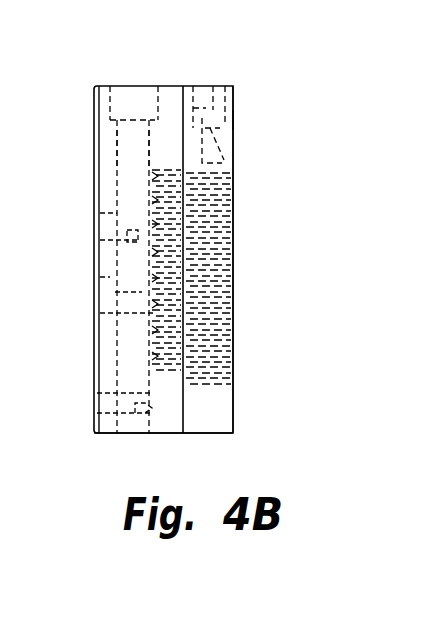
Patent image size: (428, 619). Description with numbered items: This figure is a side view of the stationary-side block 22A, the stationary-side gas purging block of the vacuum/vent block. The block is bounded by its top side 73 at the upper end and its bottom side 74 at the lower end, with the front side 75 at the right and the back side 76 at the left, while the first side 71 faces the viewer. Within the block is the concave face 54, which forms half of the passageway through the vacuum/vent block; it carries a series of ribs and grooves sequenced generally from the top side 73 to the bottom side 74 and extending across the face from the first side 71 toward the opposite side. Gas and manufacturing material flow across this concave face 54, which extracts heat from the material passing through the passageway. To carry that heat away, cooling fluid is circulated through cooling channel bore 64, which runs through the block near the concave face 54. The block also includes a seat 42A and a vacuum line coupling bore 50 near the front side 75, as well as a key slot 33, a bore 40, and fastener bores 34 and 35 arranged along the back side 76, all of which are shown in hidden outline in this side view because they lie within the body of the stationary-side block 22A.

The stationary-side block 22A is at (107, 92).
The cooling channel bore 64 is at (132, 142).
The top side 73 is at (170, 88).
The vacuum line coupling bore 50 is at (212, 100).
The front side 75 is at (237, 88).
The seat 42A is at (235, 118).
The back side 76 is at (93, 100).
The first side 71 is at (110, 162).
The fastener bore 34 is at (103, 225).
The key slot 33 is at (102, 277).
The bore 40 is at (133, 305).
The fastener bore 35 is at (100, 402).
The concave face 54 is at (250, 195).
The bottom side 74 is at (208, 434).